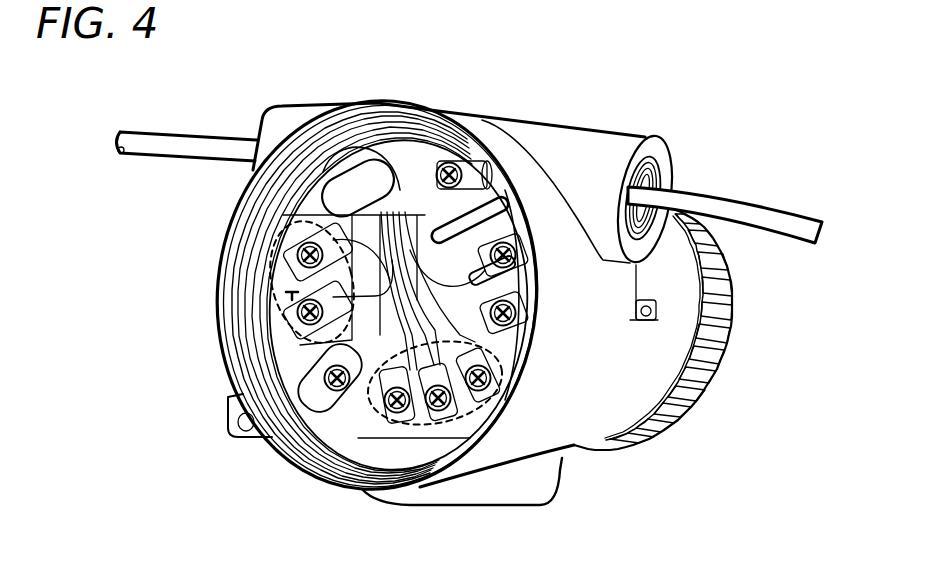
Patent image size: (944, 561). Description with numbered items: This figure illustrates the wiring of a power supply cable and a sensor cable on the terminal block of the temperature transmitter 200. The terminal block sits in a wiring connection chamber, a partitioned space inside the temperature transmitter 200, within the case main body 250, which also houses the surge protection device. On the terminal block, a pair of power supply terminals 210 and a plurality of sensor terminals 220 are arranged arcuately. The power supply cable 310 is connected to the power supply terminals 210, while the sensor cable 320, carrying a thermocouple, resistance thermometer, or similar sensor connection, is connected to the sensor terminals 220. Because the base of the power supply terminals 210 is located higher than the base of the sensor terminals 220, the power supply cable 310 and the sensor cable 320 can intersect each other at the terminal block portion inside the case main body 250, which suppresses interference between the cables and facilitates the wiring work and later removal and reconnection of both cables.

The temperature transmitter 200 is at (254, 52).
The power supply terminals 210 is at (270, 287).
The sensor terminals 220 is at (507, 383).
The case main body 250 is at (586, 432).
The power supply cable 310 is at (747, 197).
The sensor cable 320 is at (185, 143).